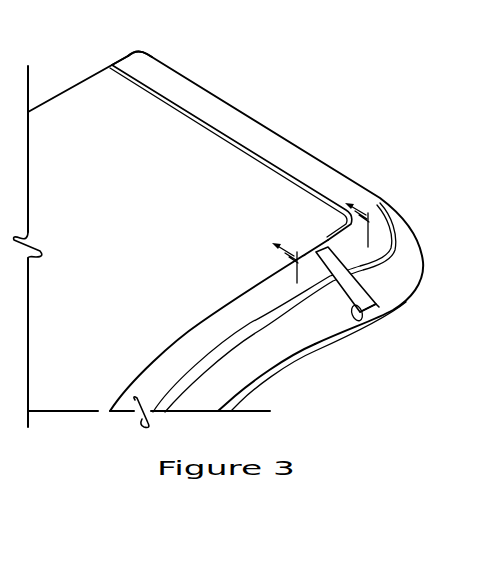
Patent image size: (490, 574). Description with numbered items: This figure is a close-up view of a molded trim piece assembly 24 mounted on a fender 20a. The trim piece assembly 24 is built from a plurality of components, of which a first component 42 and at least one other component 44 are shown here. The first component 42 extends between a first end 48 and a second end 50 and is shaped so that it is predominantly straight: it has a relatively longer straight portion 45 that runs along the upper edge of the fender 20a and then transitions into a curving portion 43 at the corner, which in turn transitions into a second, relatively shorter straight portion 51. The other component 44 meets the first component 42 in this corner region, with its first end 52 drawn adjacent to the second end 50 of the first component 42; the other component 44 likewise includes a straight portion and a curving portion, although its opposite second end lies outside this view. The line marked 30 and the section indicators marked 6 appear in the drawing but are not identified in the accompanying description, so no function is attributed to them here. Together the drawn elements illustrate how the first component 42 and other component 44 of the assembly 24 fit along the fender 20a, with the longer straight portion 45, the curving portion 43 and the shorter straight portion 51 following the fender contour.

The fender 20a is at (72, 100).
The first end 48 is at (120, 58).
The straight portion 45 is at (203, 90).
The first component 42 is at (287, 143).
The molded trim piece assembly 24 is at (222, 118).
The inner edge 30 is at (320, 238).
The section line 6 is at (327, 244).
The curving portion 43 is at (400, 236).
The first end 52 is at (371, 275).
The second straight portion 51 is at (377, 287).
The second end 50 is at (361, 319).
The other component 44 is at (260, 367).